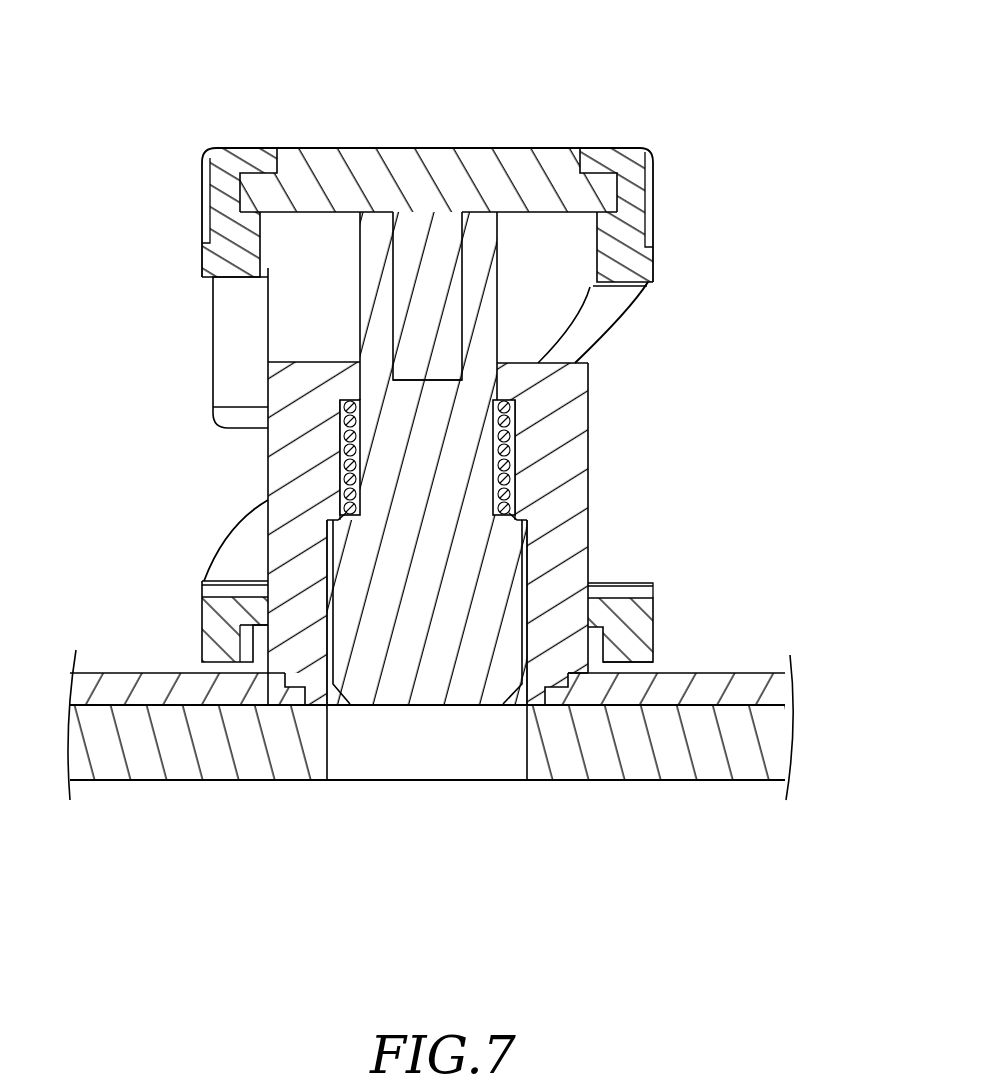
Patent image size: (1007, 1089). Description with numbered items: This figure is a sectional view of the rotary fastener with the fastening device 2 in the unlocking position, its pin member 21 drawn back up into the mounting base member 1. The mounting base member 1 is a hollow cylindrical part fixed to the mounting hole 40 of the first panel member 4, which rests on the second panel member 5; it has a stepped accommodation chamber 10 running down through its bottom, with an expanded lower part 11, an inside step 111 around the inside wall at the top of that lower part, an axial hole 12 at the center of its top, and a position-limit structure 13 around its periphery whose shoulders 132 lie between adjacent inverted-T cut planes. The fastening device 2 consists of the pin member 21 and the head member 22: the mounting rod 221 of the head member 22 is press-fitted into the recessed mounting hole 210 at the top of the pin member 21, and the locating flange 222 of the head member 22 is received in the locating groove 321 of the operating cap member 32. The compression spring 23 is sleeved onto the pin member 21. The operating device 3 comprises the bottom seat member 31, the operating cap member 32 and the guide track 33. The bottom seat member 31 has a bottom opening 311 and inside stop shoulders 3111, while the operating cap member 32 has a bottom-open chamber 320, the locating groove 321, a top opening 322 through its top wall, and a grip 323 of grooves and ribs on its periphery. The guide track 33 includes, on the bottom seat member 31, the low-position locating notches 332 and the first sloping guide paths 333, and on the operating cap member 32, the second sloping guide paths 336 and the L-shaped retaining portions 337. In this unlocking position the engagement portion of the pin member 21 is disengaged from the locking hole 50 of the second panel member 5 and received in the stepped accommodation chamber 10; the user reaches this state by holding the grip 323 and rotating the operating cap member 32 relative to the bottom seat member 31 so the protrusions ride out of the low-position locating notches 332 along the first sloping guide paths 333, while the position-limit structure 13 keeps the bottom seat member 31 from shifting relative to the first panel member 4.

The mounting base member 1 is at (647, 547).
The stepped accommodation chamber 10 is at (520, 477).
The expanded lower part 11 is at (528, 560).
The inside step 111 is at (520, 530).
The axial hole 12 is at (490, 225).
The position-limit structure 13 is at (739, 631).
The shoulder 132 is at (603, 625).
The fastening device 2 is at (578, 86).
The pin member 21 is at (378, 498).
The recessed mounting hole 210 is at (402, 330).
The head member 22 is at (560, 162).
The mounting rod 221 is at (405, 356).
The locating flange 222 is at (605, 192).
The compression spring 23 is at (345, 453).
The operating device 3 is at (722, 268).
The bottom seat member 31 is at (225, 600).
The bottom opening 311 is at (245, 645).
The inside stop shoulders 3111 is at (240, 628).
The operating cap member 32 is at (645, 262).
The bottom-open chamber 320 is at (268, 243).
The locating groove 321 is at (250, 200).
The top opening 322 is at (283, 165).
The grip 323 is at (651, 232).
The guide track 33 is at (752, 586).
The low-position locating notches 332 is at (640, 590).
The first sloping guide paths 333 is at (247, 545).
The second sloping guide paths 336 is at (598, 340).
The L-shaped retaining portions 337 is at (222, 388).
The first panel member 4 is at (85, 700).
The mounting hole 40 is at (300, 690).
The second panel member 5 is at (140, 765).
The locking hole 50 is at (372, 750).